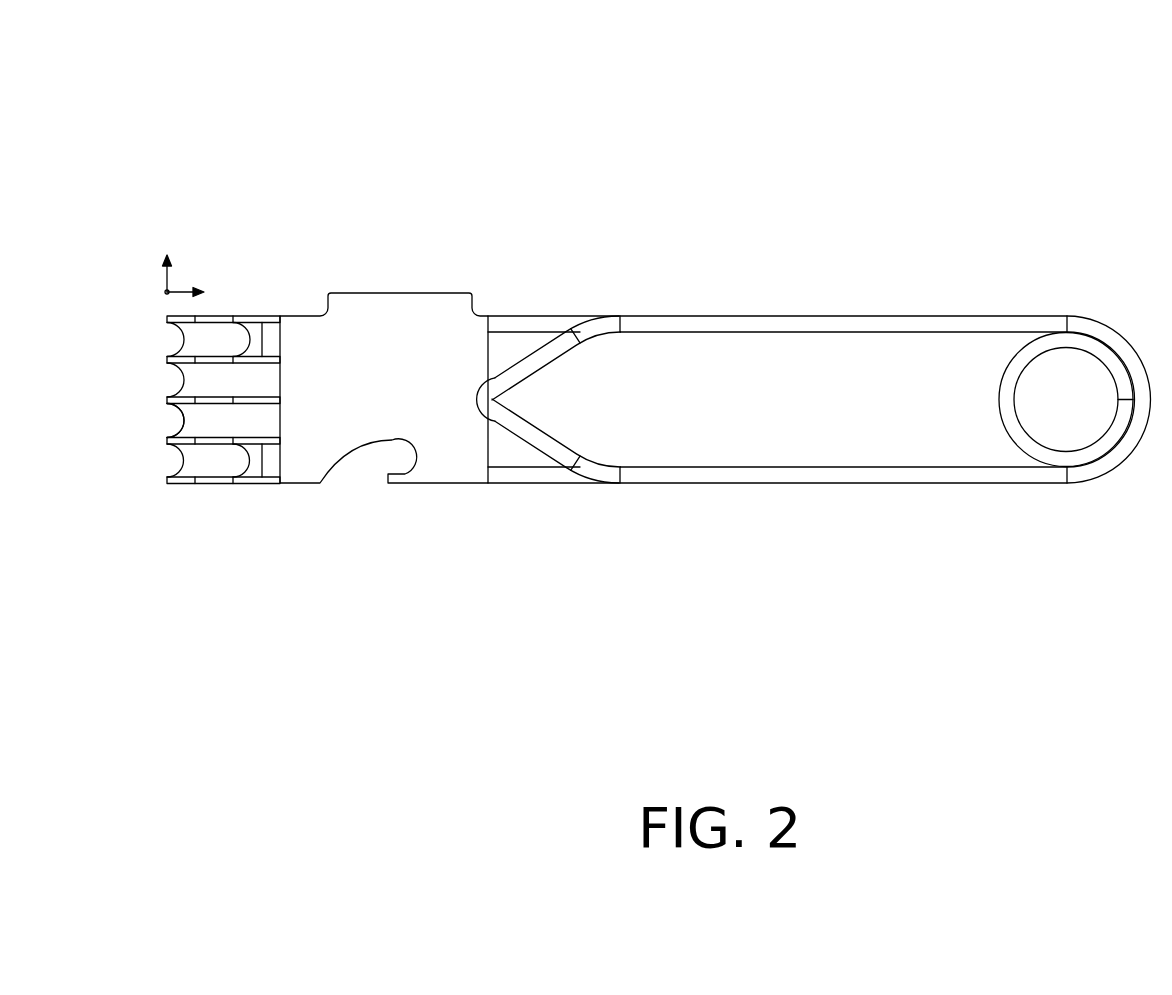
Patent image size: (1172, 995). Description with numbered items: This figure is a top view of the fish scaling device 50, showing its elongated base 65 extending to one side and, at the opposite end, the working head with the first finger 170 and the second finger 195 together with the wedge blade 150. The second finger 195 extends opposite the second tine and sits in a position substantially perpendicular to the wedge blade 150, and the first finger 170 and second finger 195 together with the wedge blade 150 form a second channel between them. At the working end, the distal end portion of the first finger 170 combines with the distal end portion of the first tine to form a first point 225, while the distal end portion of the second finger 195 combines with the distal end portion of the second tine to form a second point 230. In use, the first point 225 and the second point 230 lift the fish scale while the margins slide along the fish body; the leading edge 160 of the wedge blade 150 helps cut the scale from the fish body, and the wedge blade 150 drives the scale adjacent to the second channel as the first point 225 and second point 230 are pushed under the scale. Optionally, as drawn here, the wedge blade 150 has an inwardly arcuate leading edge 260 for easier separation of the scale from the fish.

The fish scaling device 50 is at (613, 273).
The base 65 is at (700, 316).
The wedge blade 150 is at (198, 417).
The leading edge 160 is at (266, 354).
The inwardly arcuate leading edge 260 is at (183, 395).
The first finger 170 is at (232, 396).
The second finger 195 is at (242, 444).
The first point 225 is at (180, 410).
The second point 230 is at (180, 426).